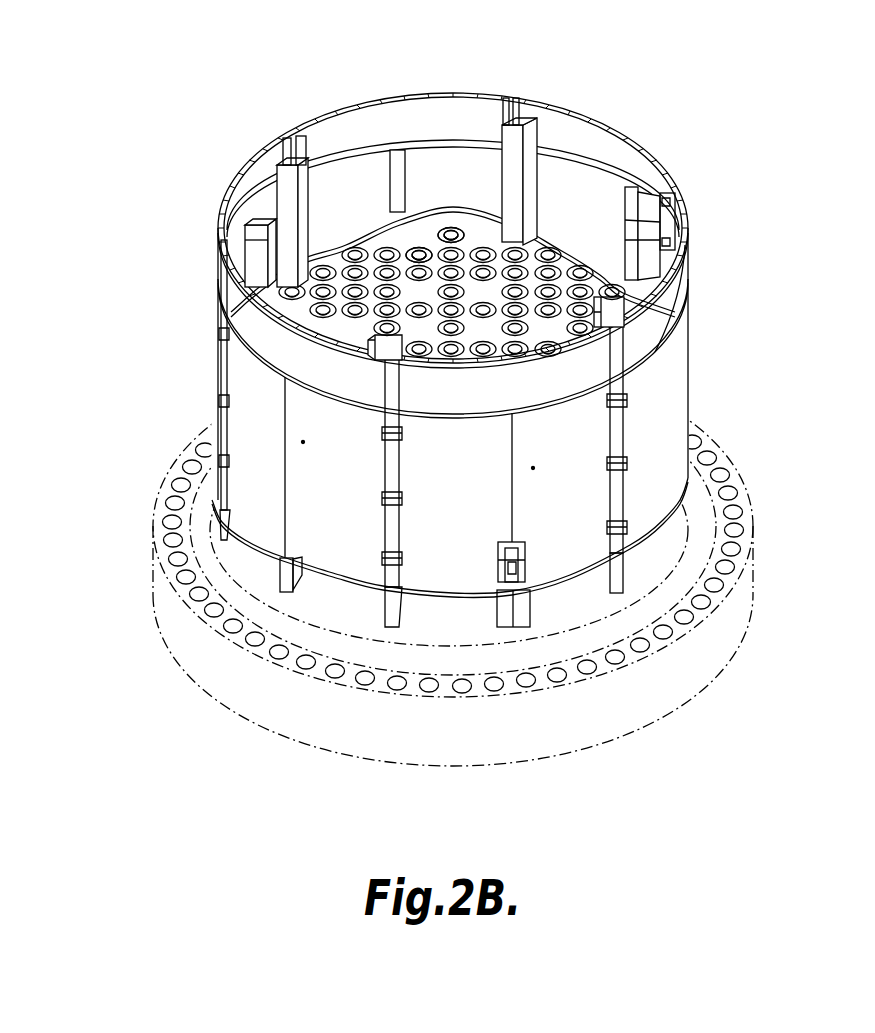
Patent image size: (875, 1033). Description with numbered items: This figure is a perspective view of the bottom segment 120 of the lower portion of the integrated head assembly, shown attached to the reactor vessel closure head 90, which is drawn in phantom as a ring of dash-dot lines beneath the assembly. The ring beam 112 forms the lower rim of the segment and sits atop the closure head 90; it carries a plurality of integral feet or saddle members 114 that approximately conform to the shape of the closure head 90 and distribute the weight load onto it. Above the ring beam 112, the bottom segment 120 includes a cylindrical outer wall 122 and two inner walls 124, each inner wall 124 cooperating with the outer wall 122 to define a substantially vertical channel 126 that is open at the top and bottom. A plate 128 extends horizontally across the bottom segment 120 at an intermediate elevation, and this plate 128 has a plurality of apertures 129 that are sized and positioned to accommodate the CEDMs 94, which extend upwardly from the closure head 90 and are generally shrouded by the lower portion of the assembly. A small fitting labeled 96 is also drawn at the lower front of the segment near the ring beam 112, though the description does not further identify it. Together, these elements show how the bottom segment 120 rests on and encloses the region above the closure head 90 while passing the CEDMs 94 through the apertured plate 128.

The reactor vessel closure head 90 is at (716, 640).
The CEDMs 94 is at (297, 302).
The clip 96 is at (513, 608).
The ring beam 112 is at (651, 535).
The saddle members 114 is at (282, 567).
The bottom segment 120 is at (645, 120).
The outer wall 122 is at (660, 423).
The inner walls 124 is at (577, 166).
The vertical channel 126 is at (638, 186).
The plate 128 is at (368, 236).
The apertures 129 is at (449, 228).